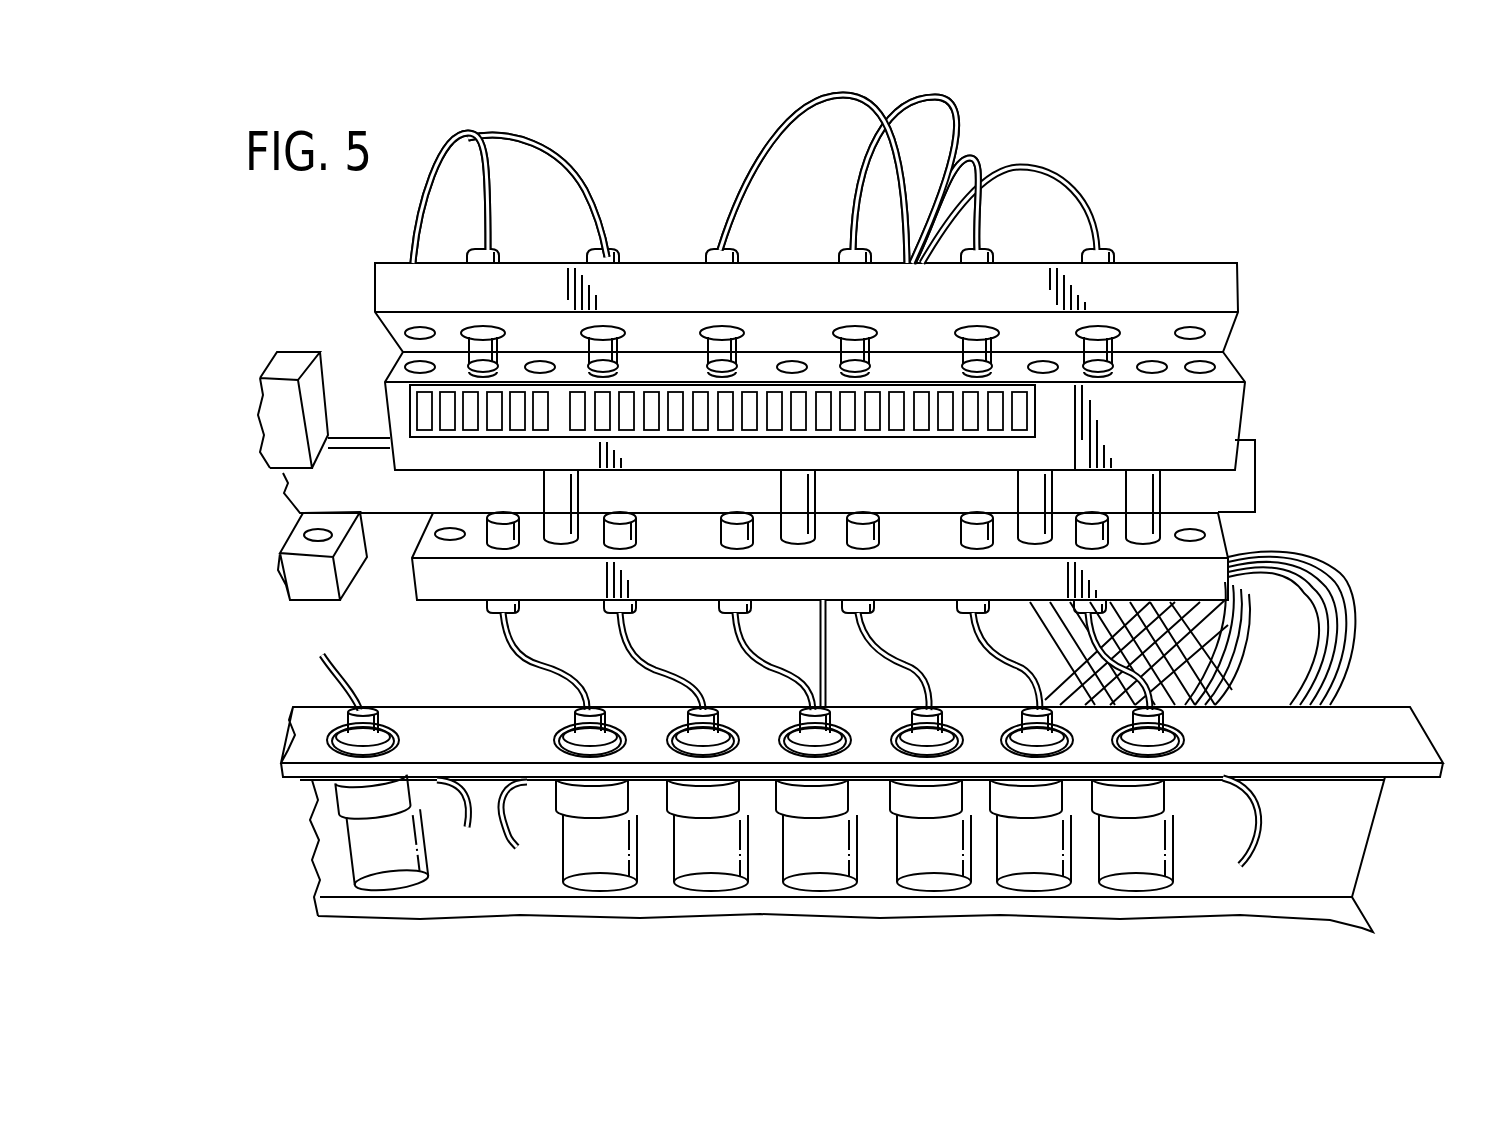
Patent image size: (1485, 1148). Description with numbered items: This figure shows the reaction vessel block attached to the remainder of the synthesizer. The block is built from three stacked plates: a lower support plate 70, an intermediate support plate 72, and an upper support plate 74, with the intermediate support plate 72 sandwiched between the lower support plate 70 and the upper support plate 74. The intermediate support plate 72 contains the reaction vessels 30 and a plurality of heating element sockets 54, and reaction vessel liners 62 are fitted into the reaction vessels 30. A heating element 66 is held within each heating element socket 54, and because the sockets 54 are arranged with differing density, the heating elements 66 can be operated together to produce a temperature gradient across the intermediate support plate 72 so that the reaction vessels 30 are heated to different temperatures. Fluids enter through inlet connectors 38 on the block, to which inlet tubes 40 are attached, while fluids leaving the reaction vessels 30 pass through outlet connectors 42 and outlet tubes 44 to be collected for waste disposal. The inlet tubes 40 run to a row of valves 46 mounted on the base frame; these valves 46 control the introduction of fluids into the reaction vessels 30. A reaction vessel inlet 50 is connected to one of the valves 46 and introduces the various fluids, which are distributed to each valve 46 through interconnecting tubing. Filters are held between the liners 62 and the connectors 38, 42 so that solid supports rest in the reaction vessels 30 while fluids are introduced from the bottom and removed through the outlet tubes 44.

The reaction vessel 30 is at (577, 357).
The inlet connector 38 is at (490, 609).
The inlet tube 40 is at (528, 677).
The outlet connector 42 is at (500, 250).
The outlet tube 44 is at (487, 160).
The valve 46 is at (612, 875).
The reaction vessel inlet 50 is at (503, 835).
The heating element socket 54 is at (1152, 362).
The reaction vessel liner 62 is at (628, 520).
The heating element 66 is at (806, 497).
The lower support plate 70 is at (1212, 532).
The intermediate support plate 72 is at (1230, 412).
The upper support plate 74 is at (1228, 290).